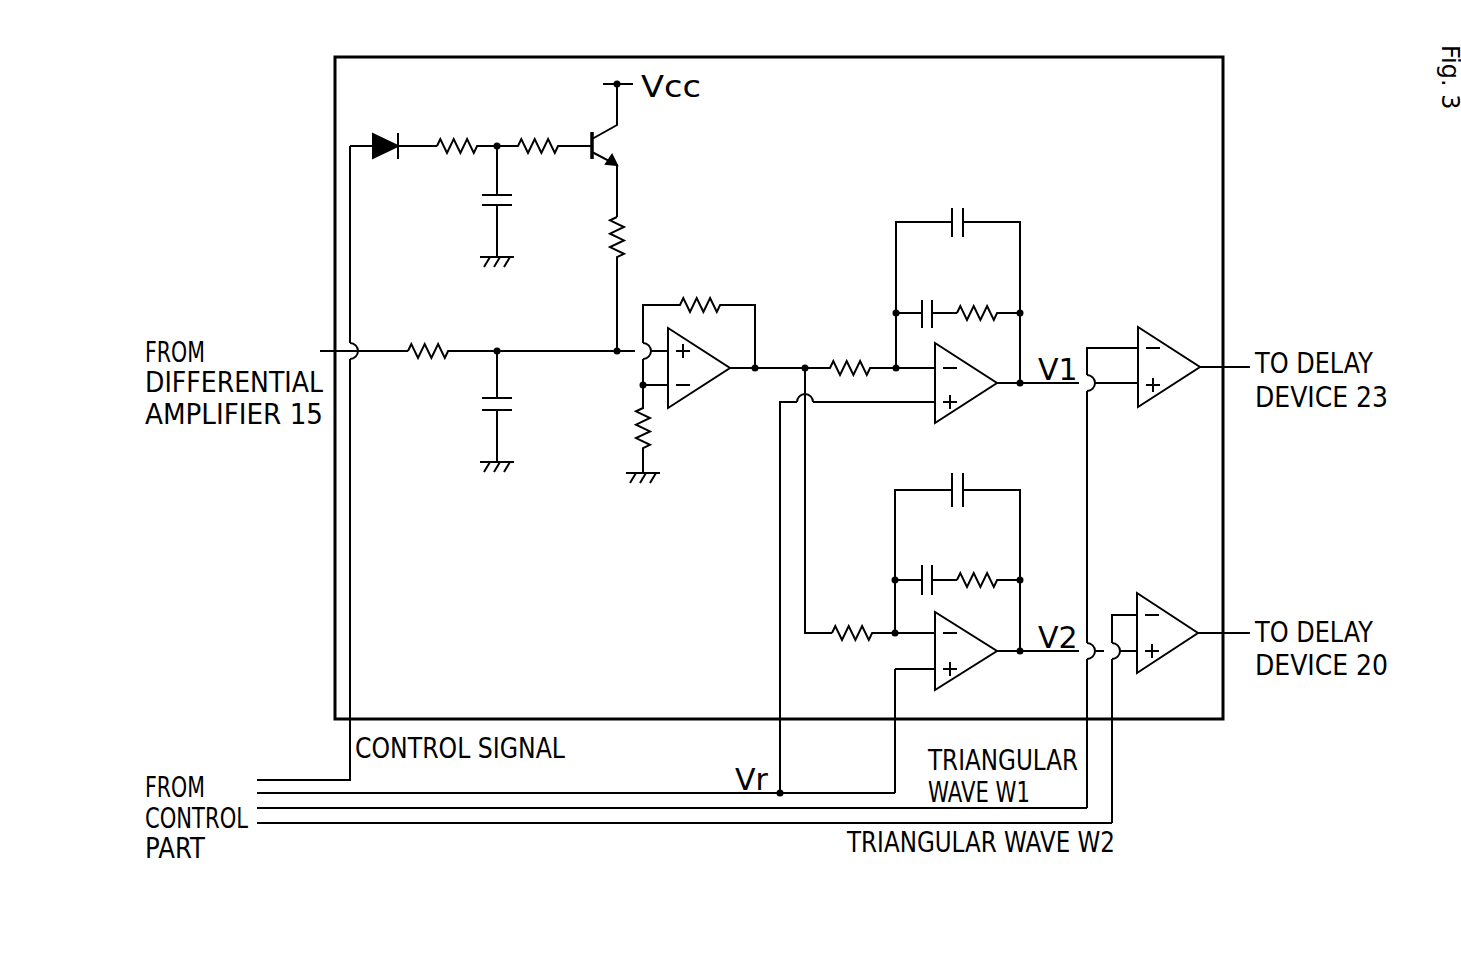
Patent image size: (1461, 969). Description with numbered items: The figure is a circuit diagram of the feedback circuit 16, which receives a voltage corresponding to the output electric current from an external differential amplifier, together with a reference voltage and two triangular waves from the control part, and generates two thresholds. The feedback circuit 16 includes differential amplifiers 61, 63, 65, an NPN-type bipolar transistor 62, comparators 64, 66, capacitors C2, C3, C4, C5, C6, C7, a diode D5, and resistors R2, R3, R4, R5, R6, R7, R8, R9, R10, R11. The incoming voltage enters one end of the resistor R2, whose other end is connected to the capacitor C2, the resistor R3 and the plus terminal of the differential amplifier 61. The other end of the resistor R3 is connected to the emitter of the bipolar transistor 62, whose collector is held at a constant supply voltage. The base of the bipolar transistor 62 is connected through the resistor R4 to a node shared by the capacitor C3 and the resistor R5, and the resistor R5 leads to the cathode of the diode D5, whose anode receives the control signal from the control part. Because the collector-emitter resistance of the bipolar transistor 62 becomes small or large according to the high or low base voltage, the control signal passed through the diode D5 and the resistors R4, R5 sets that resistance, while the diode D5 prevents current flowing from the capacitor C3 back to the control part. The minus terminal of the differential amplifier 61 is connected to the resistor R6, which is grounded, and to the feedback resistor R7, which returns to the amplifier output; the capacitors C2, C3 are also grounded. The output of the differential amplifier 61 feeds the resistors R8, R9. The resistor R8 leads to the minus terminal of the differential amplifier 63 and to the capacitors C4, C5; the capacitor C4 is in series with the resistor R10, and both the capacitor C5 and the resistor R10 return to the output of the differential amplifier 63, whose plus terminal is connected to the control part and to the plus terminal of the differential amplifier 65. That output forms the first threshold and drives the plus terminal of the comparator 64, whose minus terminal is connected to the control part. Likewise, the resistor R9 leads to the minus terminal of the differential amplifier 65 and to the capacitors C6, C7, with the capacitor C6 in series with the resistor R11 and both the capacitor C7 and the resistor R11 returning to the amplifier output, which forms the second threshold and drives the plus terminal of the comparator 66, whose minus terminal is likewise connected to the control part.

The feedback circuit 16 is at (1225, 72).
The diode D5 is at (389, 127).
The resistor R2 is at (433, 342).
The resistor R3 is at (609, 227).
The resistor R4 is at (543, 127).
The resistor R5 is at (463, 127).
The resistor R6 is at (630, 422).
The resistor R7 is at (703, 294).
The resistor R8 is at (857, 354).
The resistor R9 is at (857, 621).
The resistor R10 is at (975, 304).
The resistor R11 is at (970, 576).
The capacitor C2 is at (483, 401).
The capacitor C3 is at (483, 198).
The capacitor C4 is at (918, 301).
The capacitor C5 is at (960, 202).
The capacitor C6 is at (918, 569).
The capacitor C7 is at (972, 480).
The differential amplifier 61 is at (703, 408).
The NPN-type bipolar transistor 62 is at (622, 146).
The differential amplifier 63 is at (965, 410).
The comparator 64 is at (1170, 347).
The differential amplifier 65 is at (965, 678).
The comparator 66 is at (1170, 617).